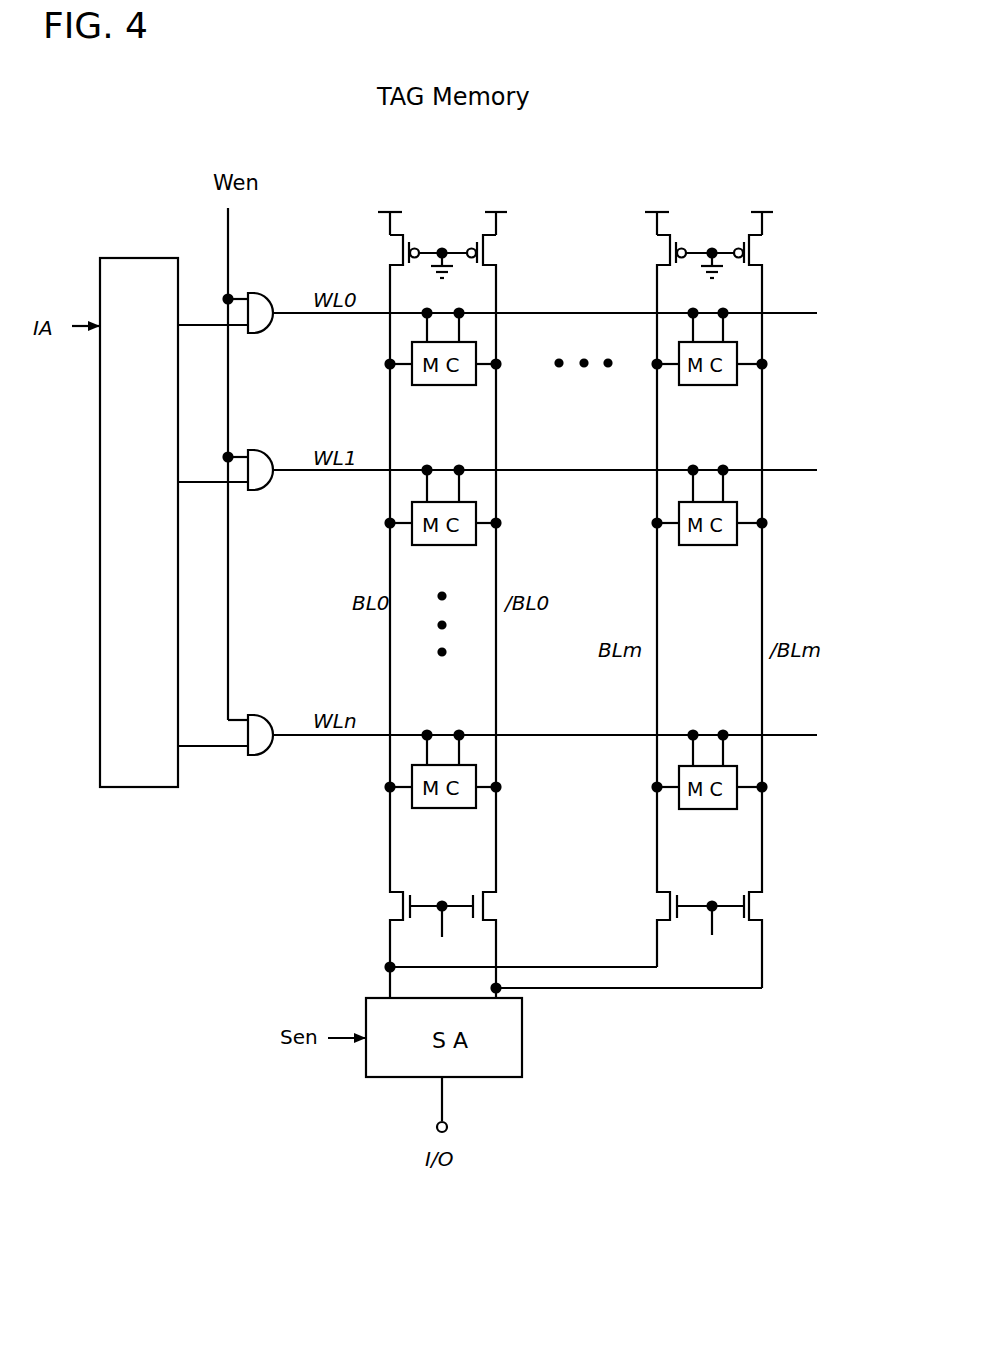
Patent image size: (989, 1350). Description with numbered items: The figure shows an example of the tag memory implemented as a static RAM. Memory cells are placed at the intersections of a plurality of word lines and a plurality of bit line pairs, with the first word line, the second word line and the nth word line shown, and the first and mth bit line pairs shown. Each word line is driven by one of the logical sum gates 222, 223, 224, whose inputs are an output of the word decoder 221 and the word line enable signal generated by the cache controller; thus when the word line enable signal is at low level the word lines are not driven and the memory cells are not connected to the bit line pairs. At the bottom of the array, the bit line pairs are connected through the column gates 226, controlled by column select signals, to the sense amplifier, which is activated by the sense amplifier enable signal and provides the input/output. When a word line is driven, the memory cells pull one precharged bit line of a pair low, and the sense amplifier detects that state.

The word decoder 221 is at (139, 522).
The logical sum gate 222 is at (269, 297).
The logical sum gate 223 is at (269, 455).
The logical sum gate 224 is at (269, 718).
The column gate 226 is at (577, 911).